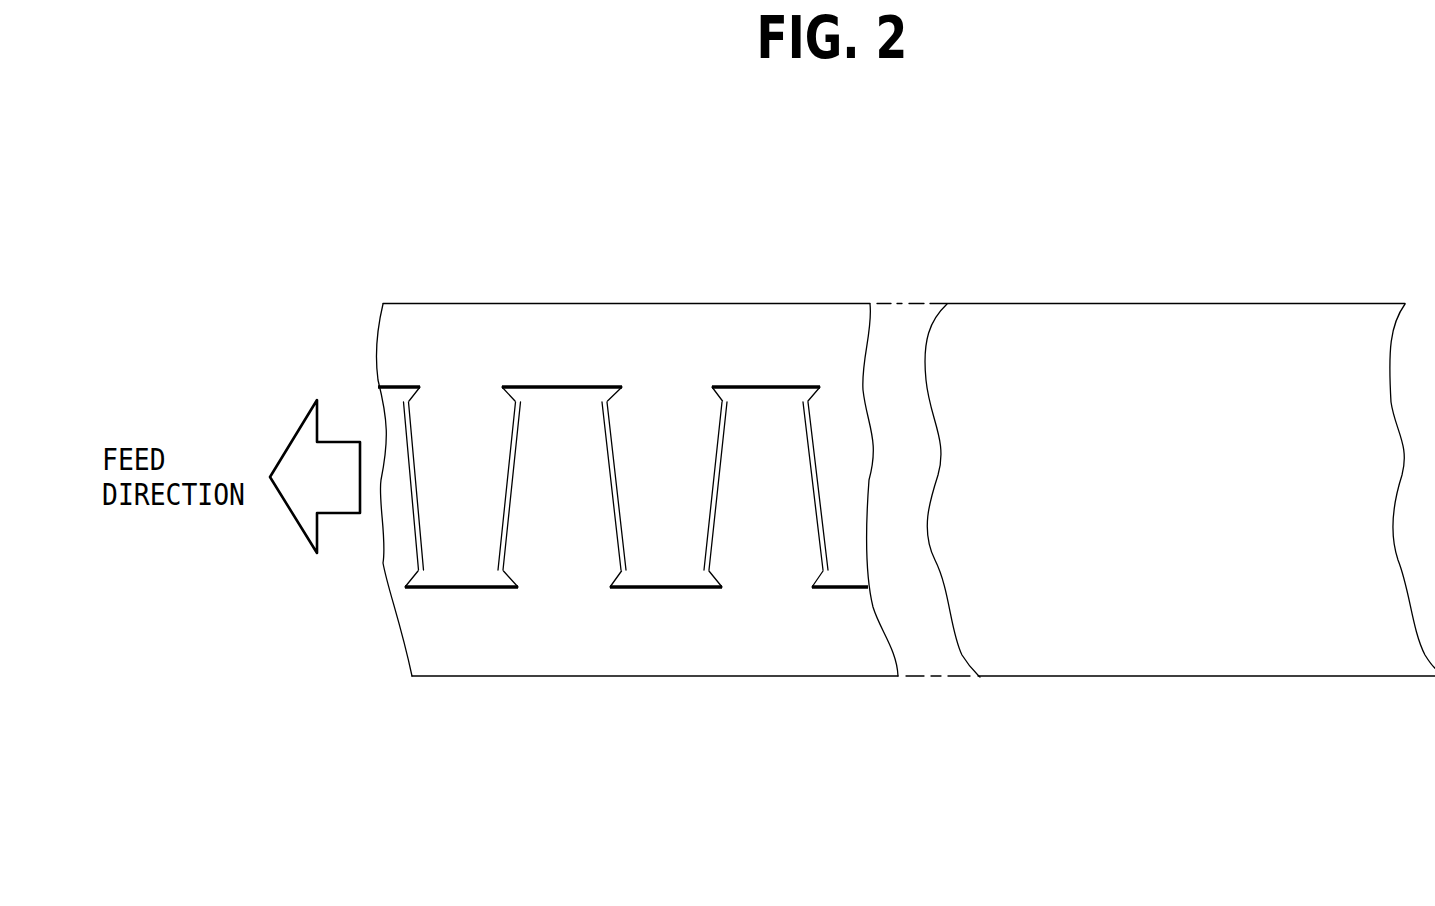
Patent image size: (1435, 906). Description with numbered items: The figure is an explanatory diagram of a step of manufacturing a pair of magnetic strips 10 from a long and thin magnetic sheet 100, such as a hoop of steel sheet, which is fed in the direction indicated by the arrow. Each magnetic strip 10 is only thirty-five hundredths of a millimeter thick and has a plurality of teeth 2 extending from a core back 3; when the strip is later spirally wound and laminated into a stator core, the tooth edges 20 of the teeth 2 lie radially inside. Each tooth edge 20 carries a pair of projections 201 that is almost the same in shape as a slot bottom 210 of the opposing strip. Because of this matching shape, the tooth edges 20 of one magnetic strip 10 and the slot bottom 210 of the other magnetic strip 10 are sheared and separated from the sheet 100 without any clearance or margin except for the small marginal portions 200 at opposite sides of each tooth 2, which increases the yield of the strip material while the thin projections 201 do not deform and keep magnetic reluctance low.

The tooth 2 is at (445, 440).
The core back 3 is at (790, 330).
The magnetic strip 10 is at (630, 291).
The tooth edge 20 is at (547, 398).
The magnetic sheet 100 is at (1162, 625).
The marginal portion 200 is at (715, 515).
The projection 201 is at (517, 390).
The slot bottom 210 is at (575, 385).